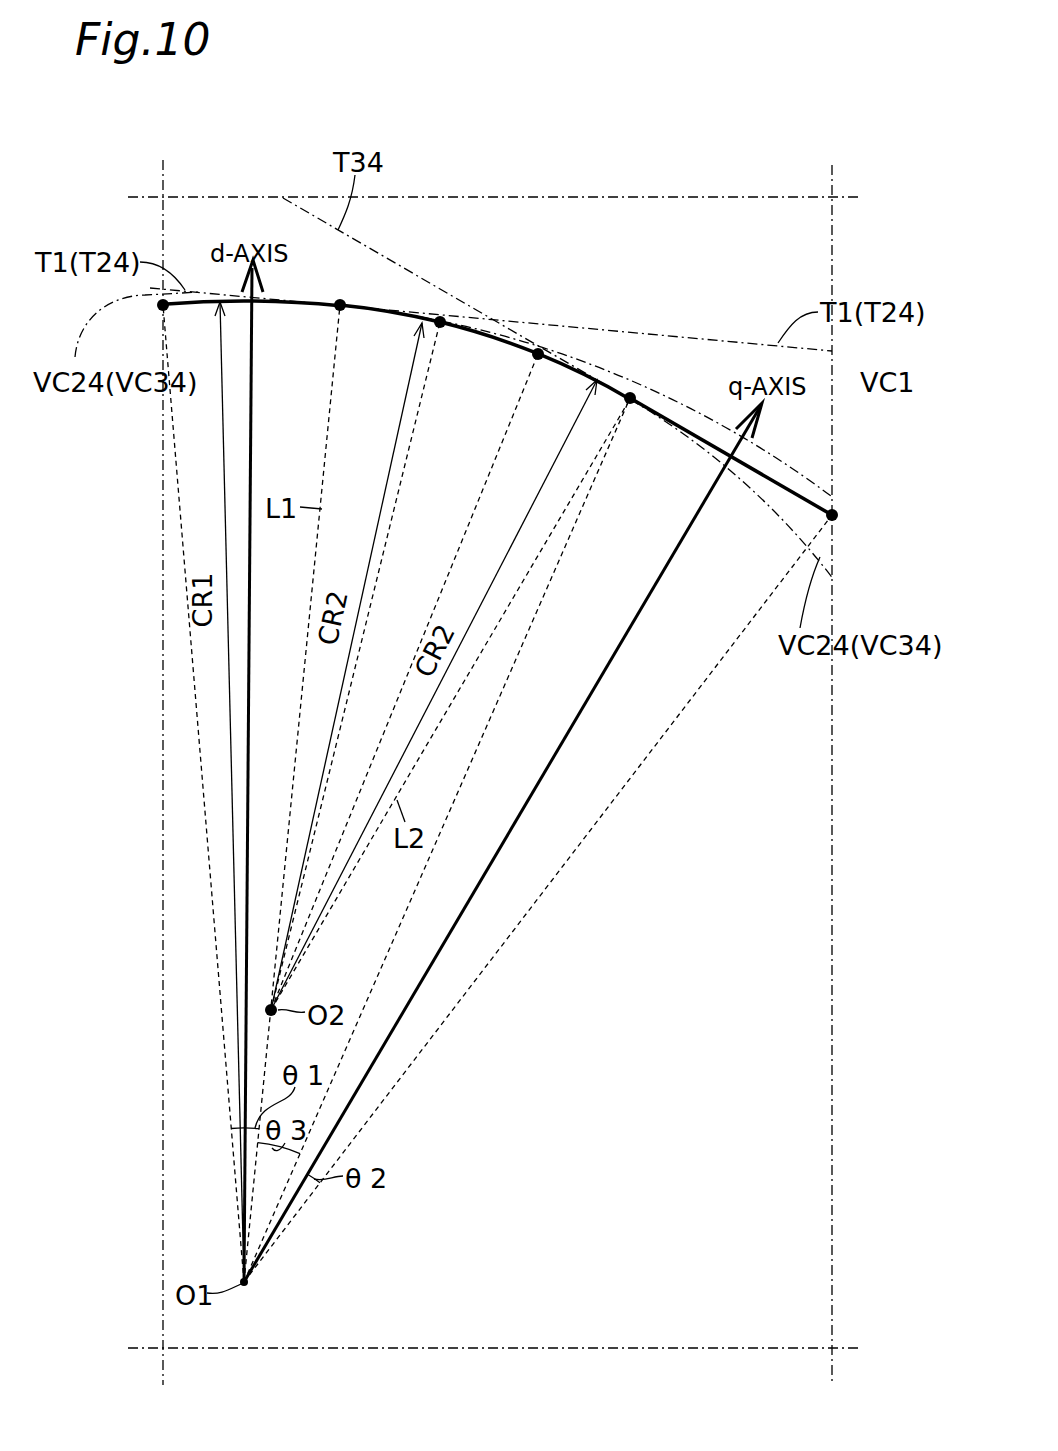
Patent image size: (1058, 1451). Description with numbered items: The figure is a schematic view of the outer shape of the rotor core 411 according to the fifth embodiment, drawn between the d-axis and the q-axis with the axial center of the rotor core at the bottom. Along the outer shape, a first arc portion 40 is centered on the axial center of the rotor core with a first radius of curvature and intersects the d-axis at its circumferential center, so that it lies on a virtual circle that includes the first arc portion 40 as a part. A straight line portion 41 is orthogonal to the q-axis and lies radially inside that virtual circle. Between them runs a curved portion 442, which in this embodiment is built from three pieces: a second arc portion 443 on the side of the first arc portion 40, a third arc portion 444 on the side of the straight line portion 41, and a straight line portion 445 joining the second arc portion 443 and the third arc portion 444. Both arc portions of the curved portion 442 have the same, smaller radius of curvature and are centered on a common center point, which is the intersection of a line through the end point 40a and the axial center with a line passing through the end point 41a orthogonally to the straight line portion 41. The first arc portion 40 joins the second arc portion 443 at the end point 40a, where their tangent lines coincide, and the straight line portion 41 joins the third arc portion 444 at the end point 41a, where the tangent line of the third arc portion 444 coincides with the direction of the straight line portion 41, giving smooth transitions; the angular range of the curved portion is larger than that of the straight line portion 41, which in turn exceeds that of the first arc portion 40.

The first arc portion 40 is at (212, 298).
The end point of the first arc portion 40a is at (343, 304).
The straight line portion 41 is at (778, 482).
The end point of the straight line portion 41a is at (633, 400).
The rotor core 411 is at (300, 295).
The curved portion 442 is at (488, 318).
The second arc portion 443 is at (440, 318).
The third arc portion 444 is at (583, 374).
The straight line portion of the curved portion 445 is at (494, 338).